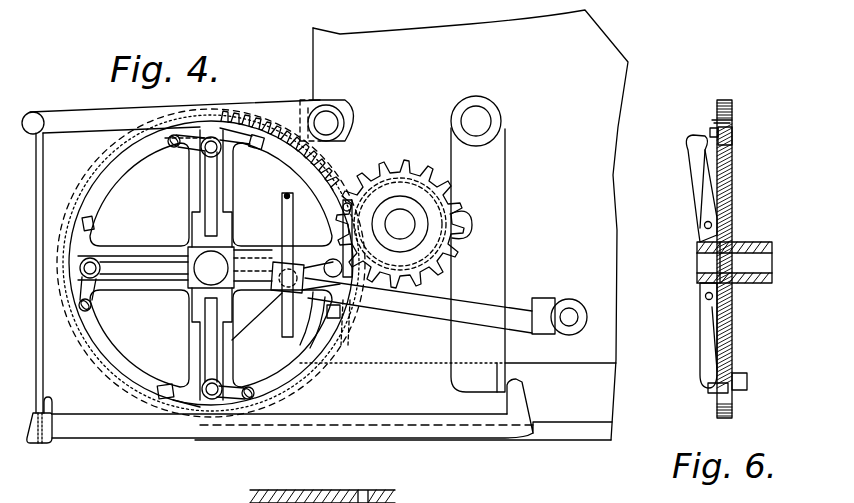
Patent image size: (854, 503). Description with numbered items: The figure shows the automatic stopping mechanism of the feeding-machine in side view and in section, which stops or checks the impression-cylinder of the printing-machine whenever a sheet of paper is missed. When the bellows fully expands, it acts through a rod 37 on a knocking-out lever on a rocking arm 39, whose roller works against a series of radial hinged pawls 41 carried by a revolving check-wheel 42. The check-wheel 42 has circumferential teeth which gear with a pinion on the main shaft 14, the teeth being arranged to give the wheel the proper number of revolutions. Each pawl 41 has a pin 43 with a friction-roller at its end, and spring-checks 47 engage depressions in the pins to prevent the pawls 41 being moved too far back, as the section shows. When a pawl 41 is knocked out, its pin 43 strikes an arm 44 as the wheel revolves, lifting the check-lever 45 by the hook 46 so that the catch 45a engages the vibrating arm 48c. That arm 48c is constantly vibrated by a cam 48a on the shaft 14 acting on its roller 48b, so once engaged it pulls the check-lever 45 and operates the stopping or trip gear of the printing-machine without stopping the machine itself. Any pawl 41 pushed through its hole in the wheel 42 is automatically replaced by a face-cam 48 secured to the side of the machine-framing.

In FIG. 4, the main shaft 14 is at (400, 224).
In FIG. 4, the rod 37 is at (295, 195).
In FIG. 4, the rocking arm 39 is at (448, 302).
In FIG. 4, the radial hinged pawl 41 is at (210, 192).
In FIG. 6, the radial hinged pawl 41 is at (705, 173).
In FIG. 4, the check-wheel 42 is at (128, 370).
In FIG. 6, the check-wheel 42 is at (731, 333).
In FIG. 6, the pin 43 is at (713, 135).
In FIG. 4, the arm 44 is at (287, 117).
In FIG. 4, the check-lever 45 is at (125, 428).
In FIG. 4, the catch 45a is at (520, 403).
In FIG. 4, the hook 46 is at (37, 350).
In FIG. 4, the spring-check 47 is at (188, 140).
In FIG. 6, the spring-check 47 is at (718, 115).
In FIG. 4, the face-cam 48 is at (307, 333).
In FIG. 4, the cam 48a is at (440, 280).
In FIG. 4, the roller 48b is at (468, 230).
In FIG. 4, the vibrating arm 48c is at (485, 257).